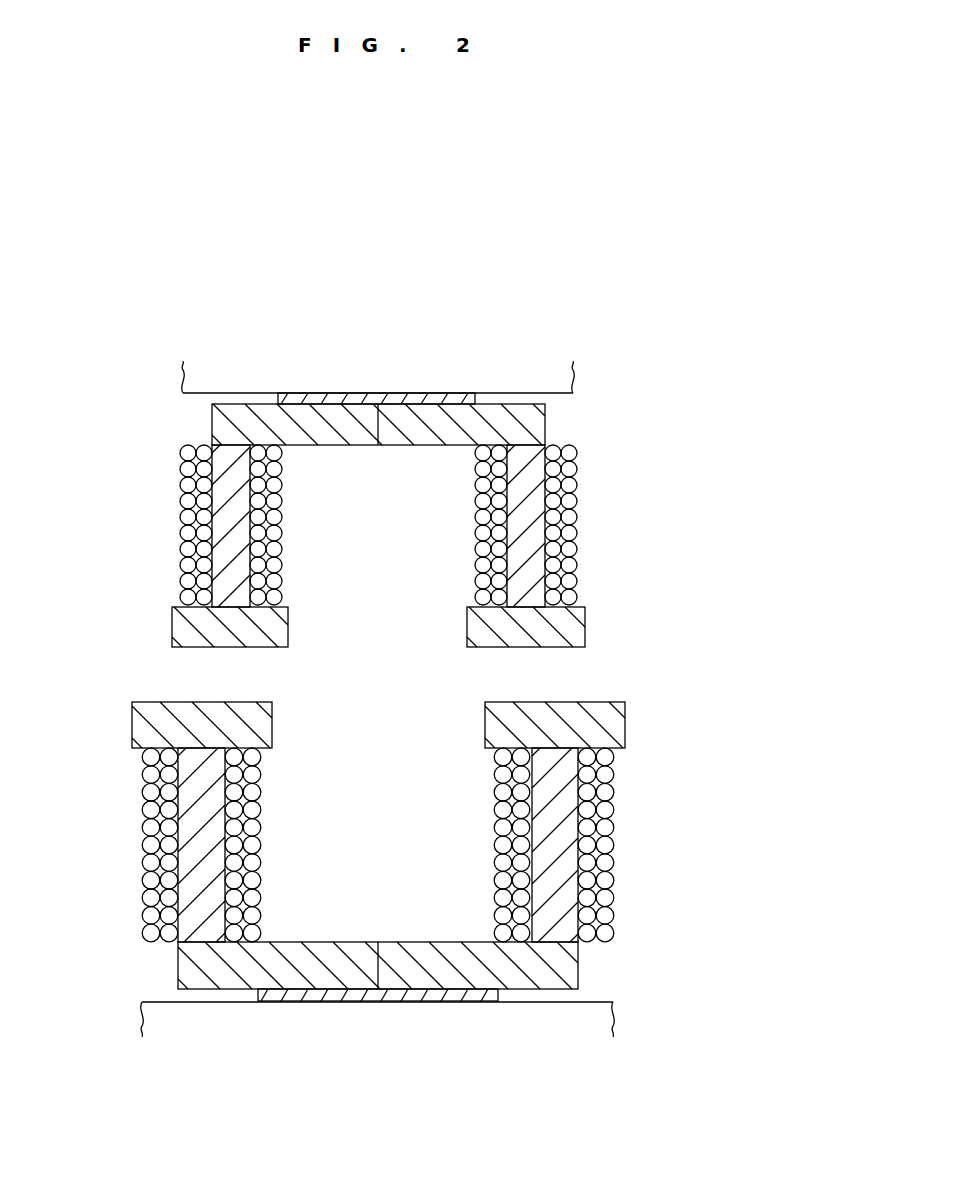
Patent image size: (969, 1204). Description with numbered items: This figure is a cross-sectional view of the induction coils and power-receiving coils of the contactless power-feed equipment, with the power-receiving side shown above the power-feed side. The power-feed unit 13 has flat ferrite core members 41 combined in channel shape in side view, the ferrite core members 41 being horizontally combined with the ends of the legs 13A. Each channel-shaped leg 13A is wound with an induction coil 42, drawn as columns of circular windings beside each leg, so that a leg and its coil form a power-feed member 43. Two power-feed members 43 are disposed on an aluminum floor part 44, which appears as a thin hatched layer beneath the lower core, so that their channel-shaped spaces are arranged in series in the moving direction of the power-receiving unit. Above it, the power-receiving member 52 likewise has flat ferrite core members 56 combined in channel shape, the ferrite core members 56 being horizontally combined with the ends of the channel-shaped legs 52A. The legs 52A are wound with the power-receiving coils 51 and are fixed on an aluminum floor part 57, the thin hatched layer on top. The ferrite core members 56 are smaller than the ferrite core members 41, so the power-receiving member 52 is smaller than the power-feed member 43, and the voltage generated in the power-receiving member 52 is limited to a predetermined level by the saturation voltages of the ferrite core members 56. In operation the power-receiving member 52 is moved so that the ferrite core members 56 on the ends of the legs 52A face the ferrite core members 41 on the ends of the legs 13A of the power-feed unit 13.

The power-feed unit 13 is at (705, 675).
The leg 13A is at (198, 878).
The ferrite core member 41 is at (143, 735).
The induction coil 42 is at (145, 838).
The power-feed member 43 is at (633, 758).
The aluminum floor part 44 is at (500, 997).
The power-receiving coil 51 is at (180, 548).
The power-receiving member 52 is at (637, 447).
The leg 52A is at (224, 492).
The ferrite core member 56 is at (538, 424).
The aluminum floor part 57 is at (425, 397).